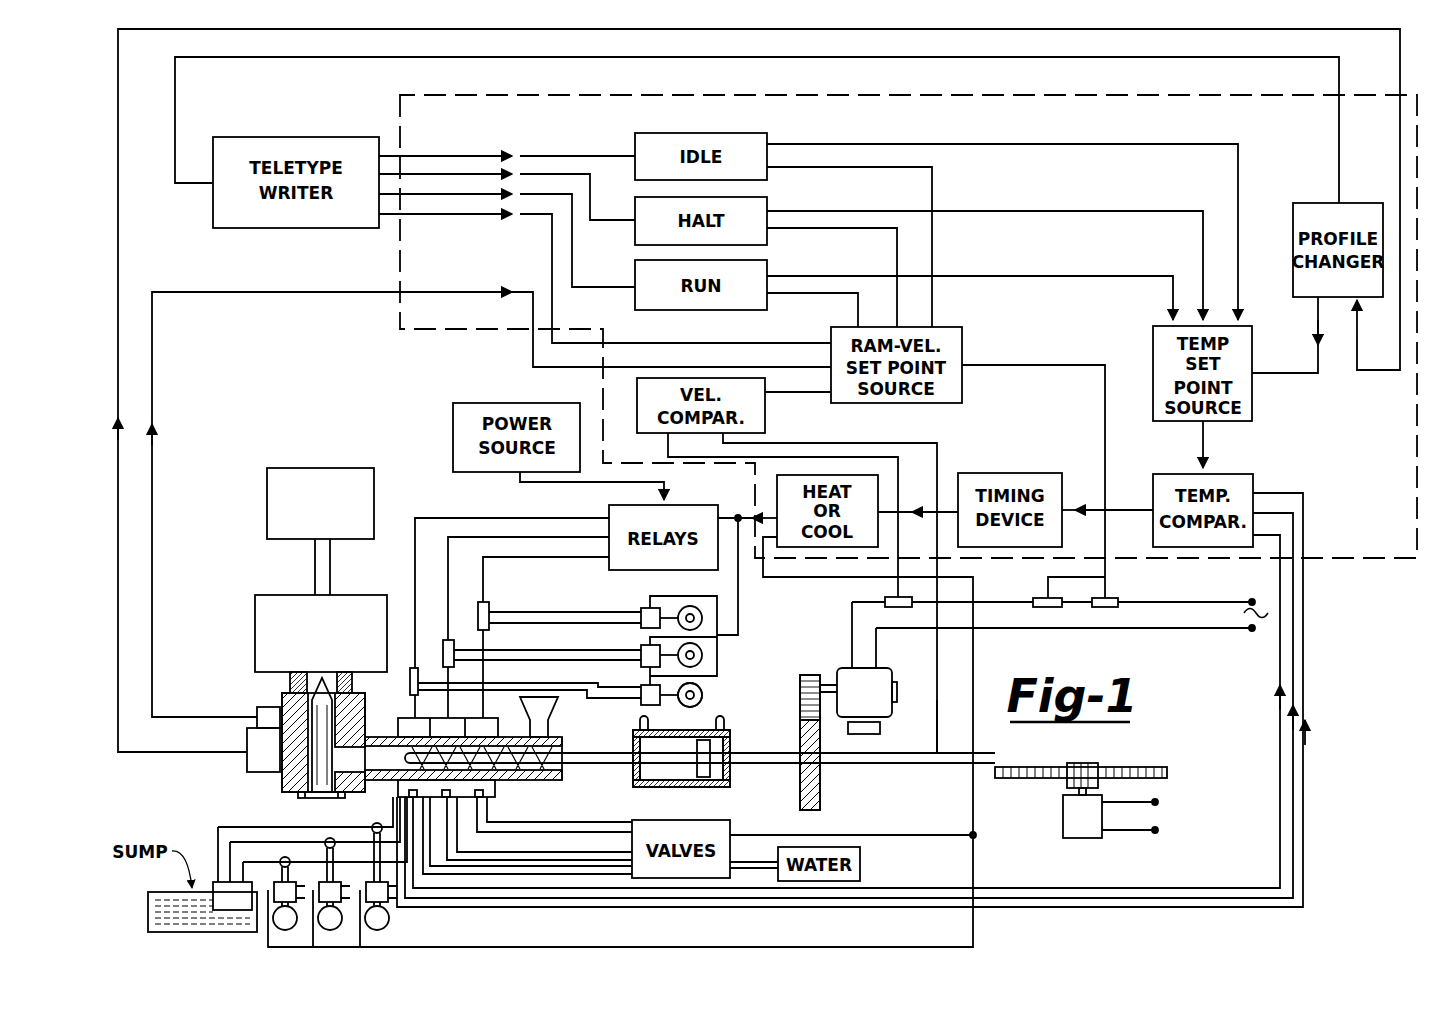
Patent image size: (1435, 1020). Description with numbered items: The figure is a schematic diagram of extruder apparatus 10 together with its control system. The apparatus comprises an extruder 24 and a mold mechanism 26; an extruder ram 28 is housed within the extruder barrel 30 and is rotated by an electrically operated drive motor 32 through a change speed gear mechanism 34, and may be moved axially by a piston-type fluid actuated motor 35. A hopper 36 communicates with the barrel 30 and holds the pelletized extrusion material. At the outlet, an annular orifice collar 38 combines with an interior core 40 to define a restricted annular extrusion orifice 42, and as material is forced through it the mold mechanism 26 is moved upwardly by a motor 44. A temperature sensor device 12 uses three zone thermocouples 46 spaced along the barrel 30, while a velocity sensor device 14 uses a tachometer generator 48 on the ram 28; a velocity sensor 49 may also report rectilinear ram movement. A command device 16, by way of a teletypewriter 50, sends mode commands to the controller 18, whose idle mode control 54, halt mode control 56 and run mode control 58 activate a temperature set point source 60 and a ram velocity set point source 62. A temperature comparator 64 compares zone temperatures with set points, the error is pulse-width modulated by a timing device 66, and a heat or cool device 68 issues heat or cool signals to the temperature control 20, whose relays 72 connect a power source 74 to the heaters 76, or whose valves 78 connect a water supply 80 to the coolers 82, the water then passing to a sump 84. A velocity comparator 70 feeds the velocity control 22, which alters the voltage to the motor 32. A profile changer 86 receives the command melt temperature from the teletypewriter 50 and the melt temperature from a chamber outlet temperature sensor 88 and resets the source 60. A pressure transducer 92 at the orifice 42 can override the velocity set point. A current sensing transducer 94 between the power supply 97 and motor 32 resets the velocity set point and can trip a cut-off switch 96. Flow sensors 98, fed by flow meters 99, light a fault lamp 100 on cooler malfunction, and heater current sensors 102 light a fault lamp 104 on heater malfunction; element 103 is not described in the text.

The extruder apparatus 10 is at (680, 778).
The temperature sensor device 12 is at (413, 895).
The velocity sensor device 14 is at (942, 672).
The command device 16 is at (312, 232).
The controller 18 is at (1360, 92).
The temperature control 20 is at (768, 550).
The velocity control 22 is at (898, 610).
The extruder 24 is at (390, 790).
The mold mechanism 26 is at (250, 626).
The extruder ram 28 is at (636, 787).
The extruder barrel 30 is at (555, 766).
The drive motor 32 is at (845, 668).
The change speed gear mechanism 34 is at (800, 718).
The piston-type fluid actuated motor 35 is at (702, 696).
The hopper 36 is at (520, 698).
The annular orifice collar 38 is at (410, 680).
The interior core 40 is at (320, 798).
The annular extrusion orifice 42 is at (290, 681).
The motor 44 is at (330, 447).
The thermocouples 46 is at (483, 797).
The tachometer generator 48 is at (880, 726).
The velocity sensor 49 is at (1063, 815).
The teletypewriter 50 is at (312, 137).
The idle mode control 54 is at (770, 136).
The halt mode control 56 is at (770, 203).
The run mode control 58 is at (770, 268).
The temperature set point source 60 is at (1252, 400).
The ram velocity set point source 62 is at (964, 345).
The temperature comparator 64 is at (1253, 476).
The timing device 66 is at (1062, 475).
The heat or cool device 68 is at (830, 548).
The velocity comparator 70 is at (765, 412).
The relays 72 is at (609, 500).
The power source 74 is at (505, 403).
The heaters 76 is at (450, 726).
The valves 78 is at (720, 820).
The water supply 80 is at (860, 862).
The coolers 82 is at (505, 790).
The sump 84 is at (148, 912).
The profile changer 86 is at (1293, 225).
The chamber outlet temperature sensor 88 is at (247, 752).
The pressure transducer 92 is at (257, 714).
The current sensing transducer 94 is at (1118, 600).
The cut-off switch 96 is at (1048, 608).
The power supply 97 is at (1255, 620).
The flow sensors 98 is at (252, 892).
The flow meters 99 is at (274, 892).
The fault lamp 100 is at (280, 925).
The heater current sensors 102 is at (445, 640).
The sensor gauge 103 is at (641, 610).
The fault lamp 104 is at (717, 676).